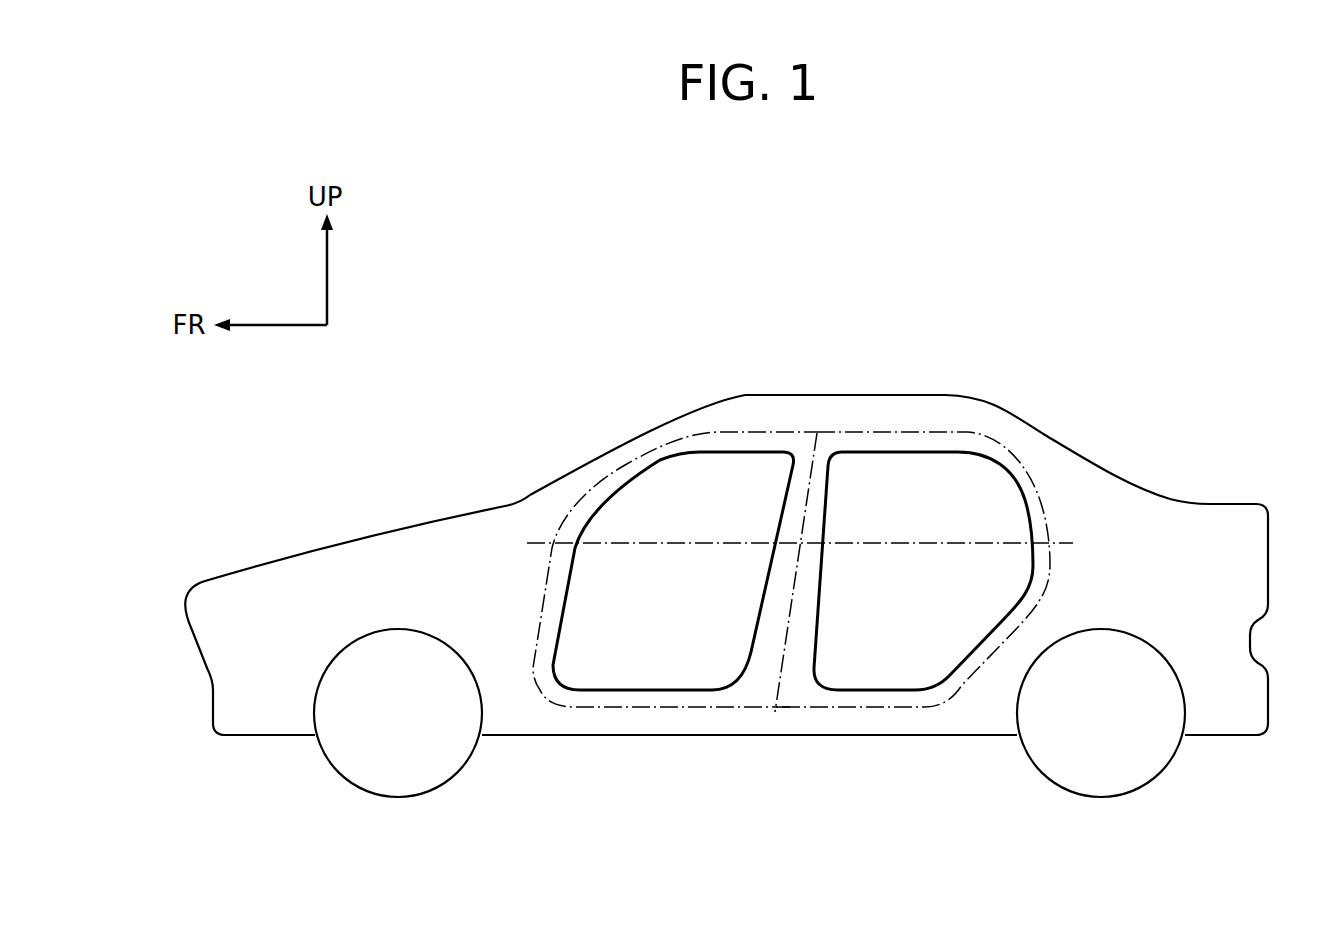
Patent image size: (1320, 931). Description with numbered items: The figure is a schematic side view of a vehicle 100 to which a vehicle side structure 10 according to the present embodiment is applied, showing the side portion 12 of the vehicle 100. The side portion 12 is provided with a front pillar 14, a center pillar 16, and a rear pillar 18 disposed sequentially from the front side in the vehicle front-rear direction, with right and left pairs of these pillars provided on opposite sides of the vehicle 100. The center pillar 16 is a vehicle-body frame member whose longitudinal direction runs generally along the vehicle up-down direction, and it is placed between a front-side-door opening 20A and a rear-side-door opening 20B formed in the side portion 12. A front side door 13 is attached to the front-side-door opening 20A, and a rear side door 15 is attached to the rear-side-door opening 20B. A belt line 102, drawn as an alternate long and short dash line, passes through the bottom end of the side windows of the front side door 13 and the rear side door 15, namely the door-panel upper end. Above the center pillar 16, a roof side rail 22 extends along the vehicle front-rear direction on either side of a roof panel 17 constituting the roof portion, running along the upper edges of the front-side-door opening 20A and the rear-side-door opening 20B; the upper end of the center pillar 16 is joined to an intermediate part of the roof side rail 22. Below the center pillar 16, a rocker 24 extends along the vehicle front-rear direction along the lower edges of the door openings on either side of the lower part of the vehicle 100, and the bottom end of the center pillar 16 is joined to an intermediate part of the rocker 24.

The vehicle 100 is at (726, 504).
The side portion 12 is at (887, 368).
The vehicle side structure 10 is at (847, 623).
The front side door 13 is at (547, 593).
The front pillar 14 is at (617, 460).
The rear side door 15 is at (1030, 595).
The center pillar 16 is at (818, 565).
The roof panel 17 is at (905, 397).
The rear pillar 18 is at (1035, 447).
The front-side-door opening 20A is at (692, 457).
The rear-side-door opening 20B is at (933, 458).
The roof side rail 22 is at (817, 398).
The rocker 24 is at (783, 722).
The belt line 102 is at (1000, 543).